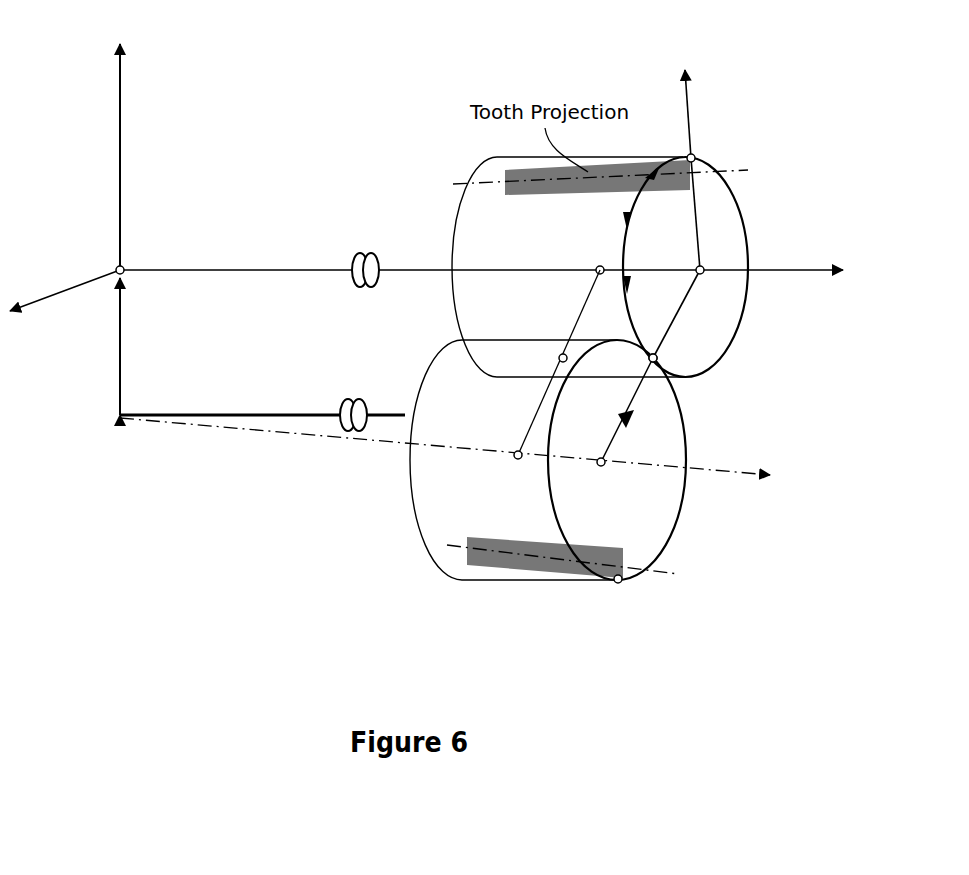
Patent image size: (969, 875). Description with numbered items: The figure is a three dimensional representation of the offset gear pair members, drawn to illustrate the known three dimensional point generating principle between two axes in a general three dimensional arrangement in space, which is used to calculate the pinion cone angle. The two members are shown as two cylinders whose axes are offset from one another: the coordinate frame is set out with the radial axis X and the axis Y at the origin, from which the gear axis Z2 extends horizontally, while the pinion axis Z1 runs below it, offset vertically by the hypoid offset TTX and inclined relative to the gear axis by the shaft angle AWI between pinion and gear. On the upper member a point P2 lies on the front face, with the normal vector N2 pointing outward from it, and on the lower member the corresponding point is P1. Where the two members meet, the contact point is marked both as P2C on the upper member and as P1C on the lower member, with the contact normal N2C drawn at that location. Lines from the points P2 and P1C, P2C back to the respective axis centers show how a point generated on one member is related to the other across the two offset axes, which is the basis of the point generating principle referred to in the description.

The X (R) axis X is at (154, 153).
The Y axis Y is at (65, 306).
The number of pinion teeth Z1 is at (445, 464).
The number of gear teeth Z2 is at (481, 289).
The hypoid offset TTX is at (125, 340).
The shaft angle AWI is at (398, 424).
The point P1 on first cylinder P1 is at (629, 593).
The point P2 on second cylinder P2 is at (693, 157).
The contact point P1C is at (655, 361).
The contact point P2C is at (657, 357).
The normal vector N2 is at (735, 62).
The normal vector N2C at contact N2C is at (617, 378).